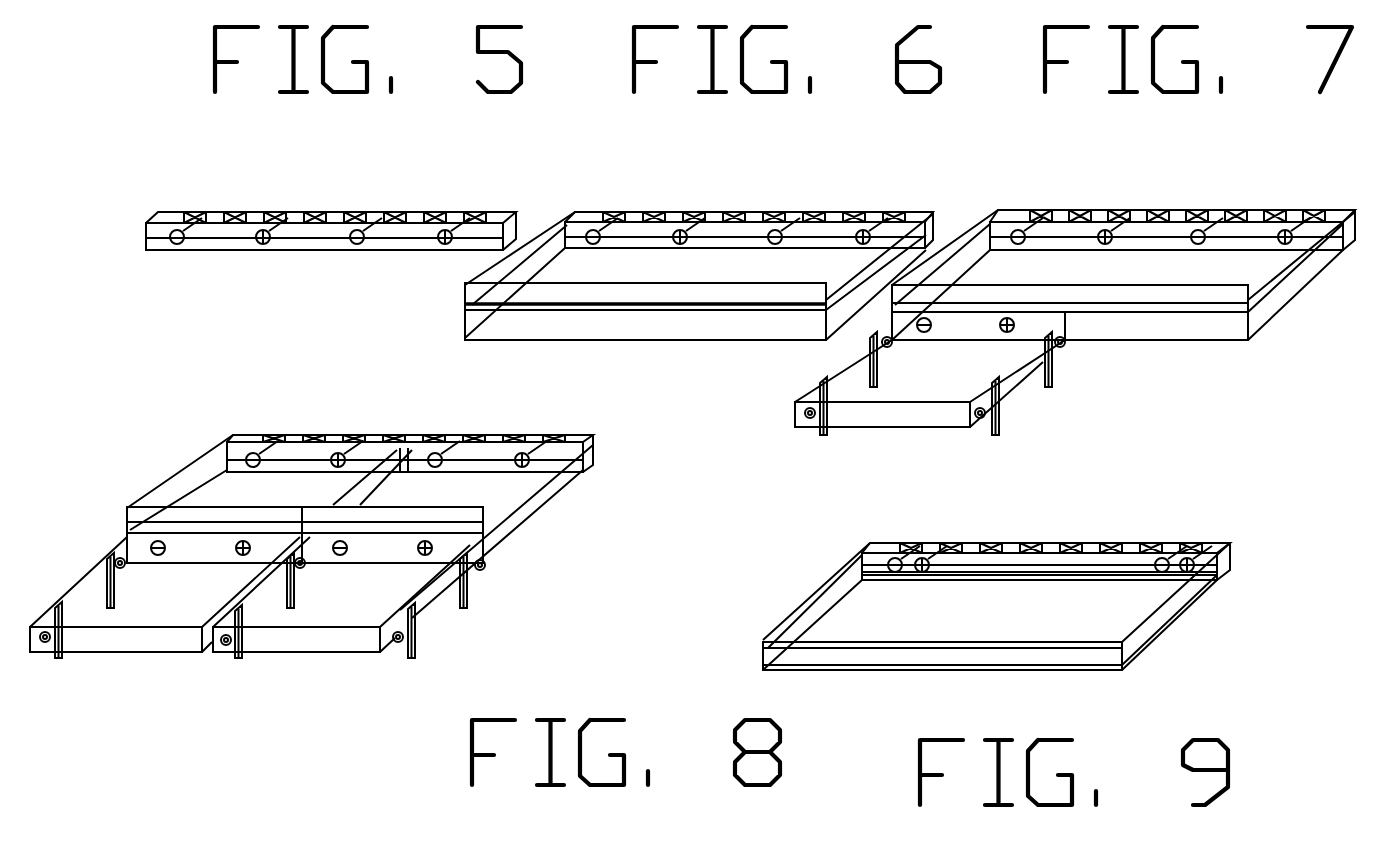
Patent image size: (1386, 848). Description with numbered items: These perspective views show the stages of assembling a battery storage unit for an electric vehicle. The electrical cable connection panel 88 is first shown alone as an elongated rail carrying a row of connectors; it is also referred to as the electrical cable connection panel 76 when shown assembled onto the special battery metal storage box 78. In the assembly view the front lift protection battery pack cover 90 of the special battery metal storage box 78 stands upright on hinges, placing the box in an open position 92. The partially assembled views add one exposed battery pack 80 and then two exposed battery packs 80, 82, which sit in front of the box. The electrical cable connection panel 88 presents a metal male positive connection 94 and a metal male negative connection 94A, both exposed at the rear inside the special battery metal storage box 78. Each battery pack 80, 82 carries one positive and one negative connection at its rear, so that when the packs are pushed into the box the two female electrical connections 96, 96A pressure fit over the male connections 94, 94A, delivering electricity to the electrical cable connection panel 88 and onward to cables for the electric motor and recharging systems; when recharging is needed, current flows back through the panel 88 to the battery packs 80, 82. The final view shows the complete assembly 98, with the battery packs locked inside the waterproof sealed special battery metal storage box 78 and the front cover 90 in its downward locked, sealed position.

In FIG. 5, the electrical cable connection panel 88 is at (331, 198).
In FIG. 6, the electrical cable connection panel 88 is at (749, 194).
In FIG. 7, the electrical cable connection panel 88 is at (1172, 201).
In FIG. 6, the special battery metal storage box 78 is at (699, 240).
In FIG. 6, the front lift protection battery pack cover 90 is at (645, 345).
In FIG. 7, the electrical cable connection panel 76 is at (1123, 248).
In FIG. 7, the female electrical connection 96 is at (1070, 360).
In FIG. 8, the female electrical connection 96 is at (355, 556).
In FIG. 7, the open position 92 is at (930, 412).
In FIG. 8, the metal male positive connection 94 is at (409, 526).
In FIG. 8, the metal male negative connection 94A is at (511, 494).
In FIG. 8, the female electrical connection 96A is at (443, 583).
In FIG. 8, the battery pack 80 is at (165, 642).
In FIG. 8, the battery pack 82 is at (349, 642).
In FIG. 9, the complete assembly 98 is at (1000, 614).